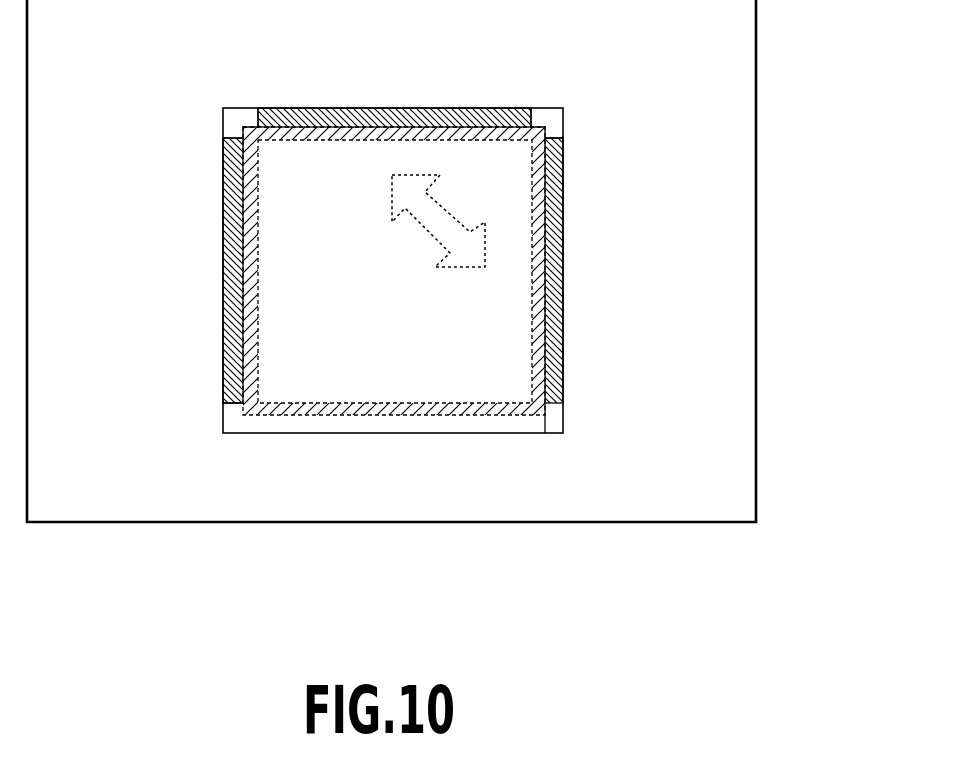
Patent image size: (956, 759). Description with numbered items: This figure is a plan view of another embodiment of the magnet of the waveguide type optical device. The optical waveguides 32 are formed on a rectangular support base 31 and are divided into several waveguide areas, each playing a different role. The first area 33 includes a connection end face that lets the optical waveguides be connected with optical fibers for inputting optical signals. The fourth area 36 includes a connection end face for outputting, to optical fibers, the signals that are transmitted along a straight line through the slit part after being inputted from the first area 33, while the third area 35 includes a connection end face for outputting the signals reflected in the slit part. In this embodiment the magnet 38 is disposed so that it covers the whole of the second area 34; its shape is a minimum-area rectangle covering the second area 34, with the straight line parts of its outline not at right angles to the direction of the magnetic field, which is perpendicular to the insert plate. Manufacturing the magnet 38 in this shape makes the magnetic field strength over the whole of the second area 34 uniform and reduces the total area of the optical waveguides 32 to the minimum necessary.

The support base 31 is at (757, 190).
The optical waveguides 32 is at (419, 241).
The Area 1 33 is at (244, 131).
The Area 2 34 is at (478, 340).
The Area 3 35 is at (534, 121).
The Area 4 36 is at (548, 416).
The magnet 38 is at (546, 178).